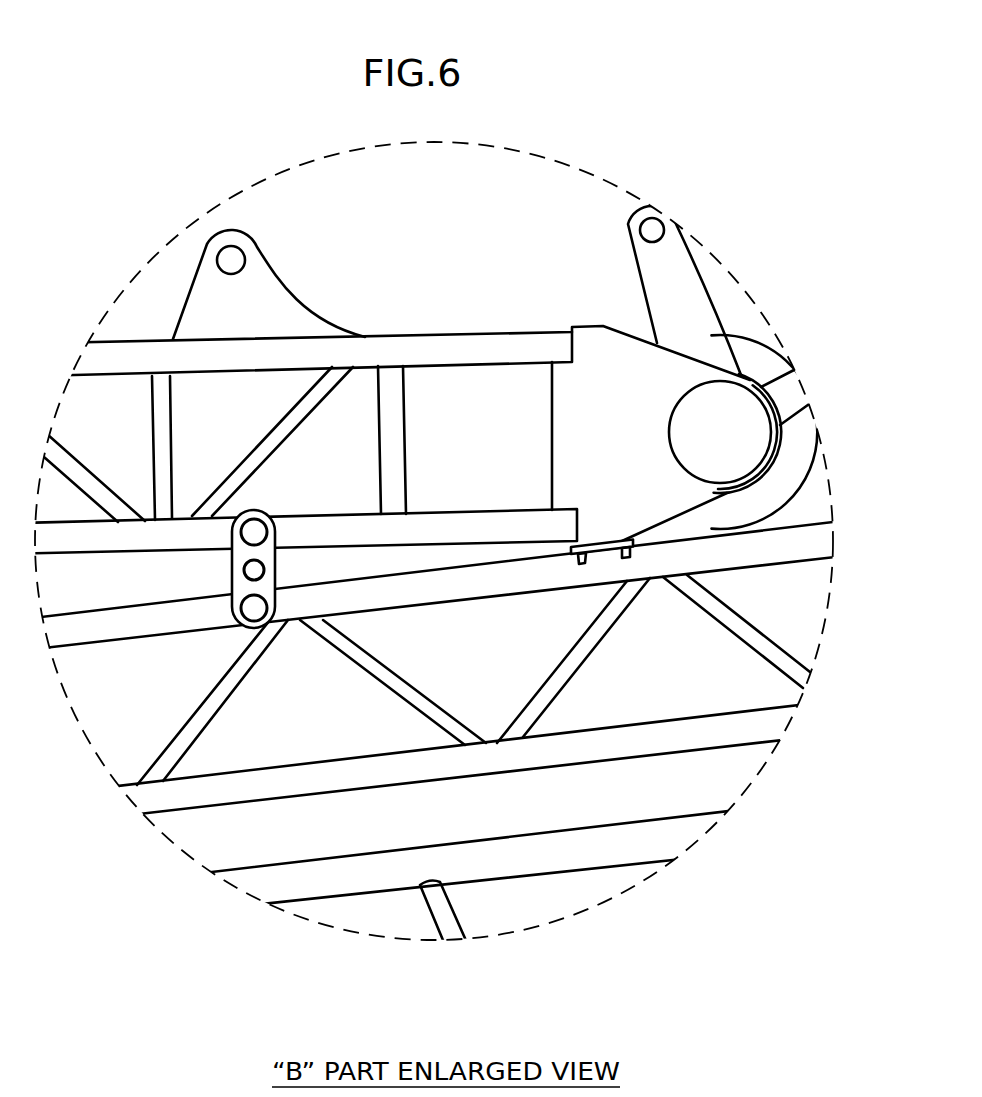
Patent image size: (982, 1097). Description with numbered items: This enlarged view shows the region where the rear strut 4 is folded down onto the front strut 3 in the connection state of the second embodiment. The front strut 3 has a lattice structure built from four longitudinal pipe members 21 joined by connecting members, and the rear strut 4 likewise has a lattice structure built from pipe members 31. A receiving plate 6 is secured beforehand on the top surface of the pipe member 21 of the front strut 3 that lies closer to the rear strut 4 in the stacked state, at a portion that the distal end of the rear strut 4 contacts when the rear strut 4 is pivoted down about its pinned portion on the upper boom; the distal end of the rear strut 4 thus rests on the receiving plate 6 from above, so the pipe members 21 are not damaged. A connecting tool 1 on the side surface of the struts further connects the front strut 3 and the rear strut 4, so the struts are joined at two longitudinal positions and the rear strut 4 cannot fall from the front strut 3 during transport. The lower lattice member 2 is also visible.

The connecting tool 1 is at (262, 505).
The boom lower chord member 2 is at (617, 868).
The front strut 3 is at (203, 812).
The rear strut 4 is at (415, 336).
The receiving plate 6 is at (622, 538).
The pipe member 21 is at (512, 587).
The pipe member 31 is at (445, 522).